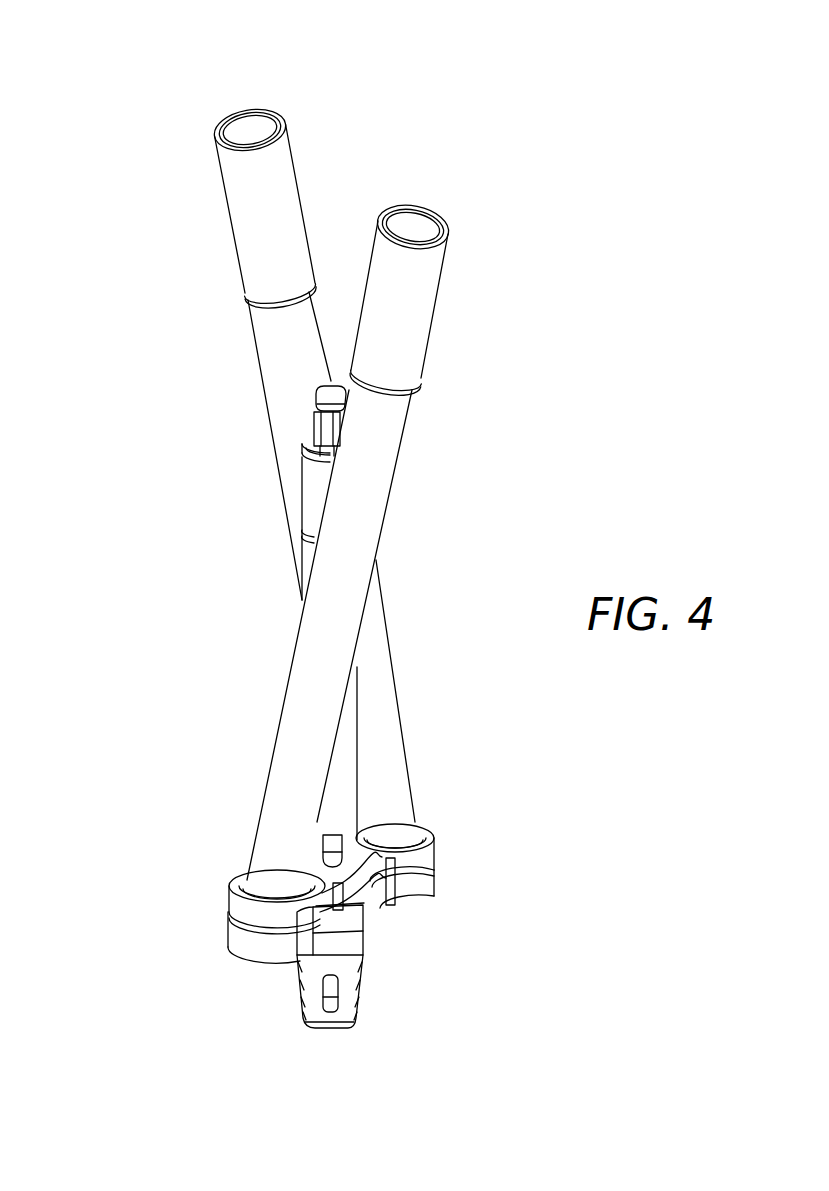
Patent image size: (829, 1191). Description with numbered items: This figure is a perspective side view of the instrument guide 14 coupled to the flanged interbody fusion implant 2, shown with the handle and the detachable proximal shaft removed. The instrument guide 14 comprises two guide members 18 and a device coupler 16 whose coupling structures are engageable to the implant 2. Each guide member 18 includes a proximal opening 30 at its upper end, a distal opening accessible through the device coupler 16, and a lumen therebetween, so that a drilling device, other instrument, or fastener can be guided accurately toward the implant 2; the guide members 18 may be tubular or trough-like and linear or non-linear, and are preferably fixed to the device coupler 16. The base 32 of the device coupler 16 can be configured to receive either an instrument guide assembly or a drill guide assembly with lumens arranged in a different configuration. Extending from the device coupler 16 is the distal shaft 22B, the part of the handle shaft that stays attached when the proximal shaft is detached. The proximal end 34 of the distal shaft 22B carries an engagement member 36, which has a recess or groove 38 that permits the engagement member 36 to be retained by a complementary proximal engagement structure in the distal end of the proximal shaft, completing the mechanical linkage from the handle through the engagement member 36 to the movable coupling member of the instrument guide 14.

The implant 2 is at (284, 1032).
The instrument guide 14 is at (490, 520).
The device coupler 16 is at (206, 891).
The guide members 18 is at (270, 228).
The distal shaft 22B is at (343, 798).
The proximal opening 30 is at (245, 128).
The base 32 is at (345, 904).
The proximal end 34 is at (275, 493).
The engagement member 36 is at (278, 420).
The recess or groove 38 is at (330, 420).